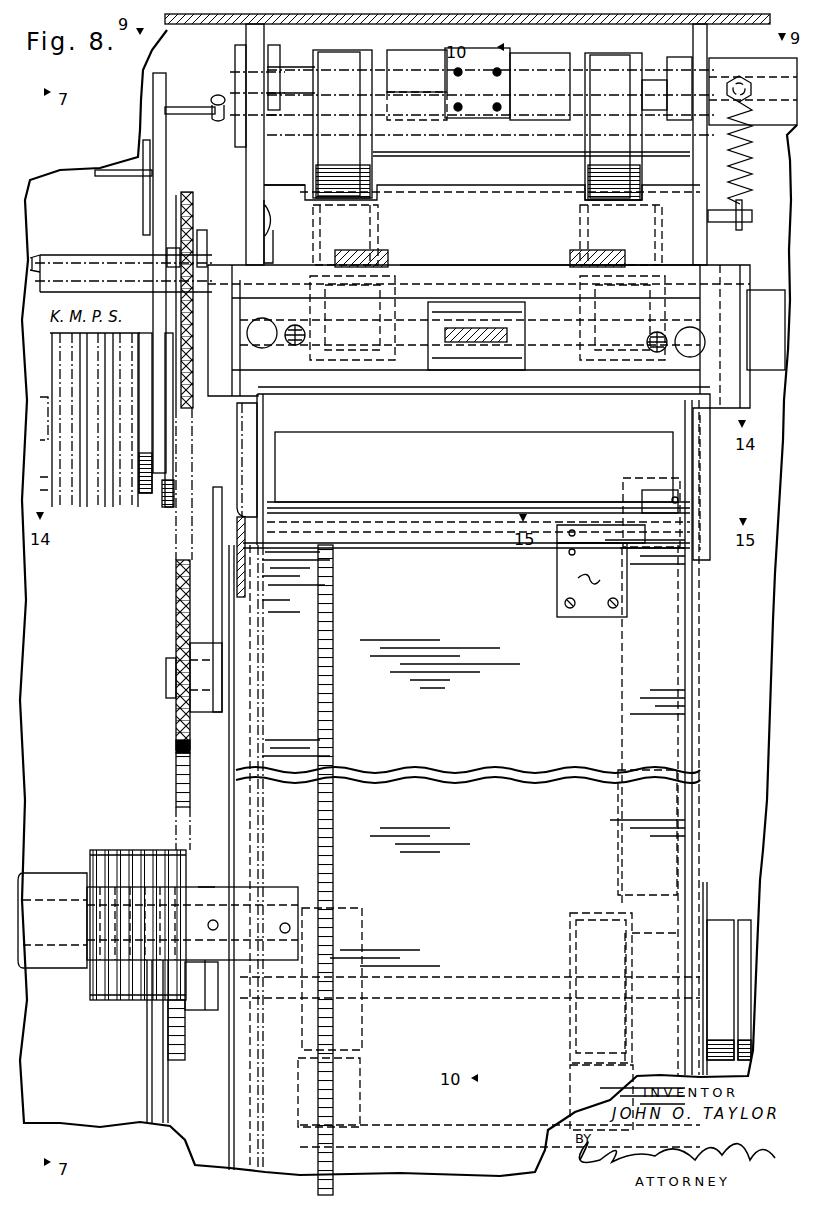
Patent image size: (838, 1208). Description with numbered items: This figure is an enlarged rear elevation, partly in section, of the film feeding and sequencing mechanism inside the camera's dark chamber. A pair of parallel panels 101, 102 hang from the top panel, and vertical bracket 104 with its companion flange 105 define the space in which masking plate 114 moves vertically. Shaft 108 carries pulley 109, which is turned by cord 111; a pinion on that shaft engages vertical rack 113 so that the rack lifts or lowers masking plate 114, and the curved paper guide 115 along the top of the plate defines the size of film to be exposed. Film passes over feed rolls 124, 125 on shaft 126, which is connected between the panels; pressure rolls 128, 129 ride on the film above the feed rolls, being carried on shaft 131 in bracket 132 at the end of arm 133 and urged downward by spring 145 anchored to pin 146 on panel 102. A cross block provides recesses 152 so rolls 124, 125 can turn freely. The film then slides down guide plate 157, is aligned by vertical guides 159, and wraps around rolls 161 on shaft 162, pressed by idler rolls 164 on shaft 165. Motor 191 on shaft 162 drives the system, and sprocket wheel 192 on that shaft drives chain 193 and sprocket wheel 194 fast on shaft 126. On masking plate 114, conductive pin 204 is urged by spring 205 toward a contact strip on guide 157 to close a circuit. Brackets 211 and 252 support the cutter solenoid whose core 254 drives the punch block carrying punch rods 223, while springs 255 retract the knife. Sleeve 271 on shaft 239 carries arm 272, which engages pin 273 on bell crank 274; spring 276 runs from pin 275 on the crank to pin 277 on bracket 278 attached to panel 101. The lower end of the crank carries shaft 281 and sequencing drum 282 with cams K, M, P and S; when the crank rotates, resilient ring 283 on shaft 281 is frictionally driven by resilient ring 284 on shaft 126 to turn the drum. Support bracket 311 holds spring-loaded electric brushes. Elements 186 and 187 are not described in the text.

The panel 101 is at (264, 40).
The panel 102 is at (700, 62).
The vertical bracket 104 is at (700, 655).
The right angle flange 105 is at (237, 762).
The shaft 108 is at (270, 898).
The pulley 109 is at (135, 850).
The cord 111 is at (165, 1087).
The vertical rack 113 is at (334, 712).
The masking plate 114 is at (360, 541).
The curved paper guide 115 is at (318, 500).
The feed roll 124 is at (372, 218).
The feed roll 125 is at (582, 212).
The shaft 126 is at (456, 265).
The pressure roll 128 is at (322, 56).
The pressure roll 129 is at (622, 53).
The shaft 131 is at (650, 130).
The bracket 132 is at (540, 95).
The arm 133 is at (475, 118).
The spring 145 is at (752, 175).
The pin 146 is at (728, 224).
The recess 152 is at (376, 340).
The guide plate 157 is at (493, 436).
The vertically extending guide 159 is at (237, 404).
The roll 161 is at (350, 908).
The shaft 162 is at (460, 975).
The idler roll 164 is at (348, 1095).
The shaft 165 is at (480, 1148).
The rack 186 is at (176, 630).
The slide 187 is at (222, 650).
The motor 191 is at (730, 920).
The sprocket wheel 192 is at (185, 1050).
The chain 193 is at (176, 770).
The sprocket wheel 194 is at (194, 214).
The electrically conductive pin 204 is at (680, 500).
The electrically conductive spring 205 is at (595, 522).
The bracket 211 is at (230, 267).
The punch rod 223 is at (270, 320).
The shaft 239 is at (44, 256).
The bracket 252 is at (380, 250).
The core 254 is at (496, 342).
The spring 255 is at (296, 345).
The sleeve 271 is at (118, 256).
The arm 272 is at (143, 199).
The pin 273 is at (112, 170).
The bell crank 274 is at (153, 90).
The pin 275 is at (203, 107).
The spring 276 is at (218, 95).
The pin 277 is at (218, 120).
The bracket 278 is at (235, 56).
The shaft 281 is at (44, 397).
The sequencing drum 282 is at (43, 478).
The resilient ring 283 is at (152, 500).
The resilient ring 284 is at (176, 200).
The support bracket 311 is at (205, 887).